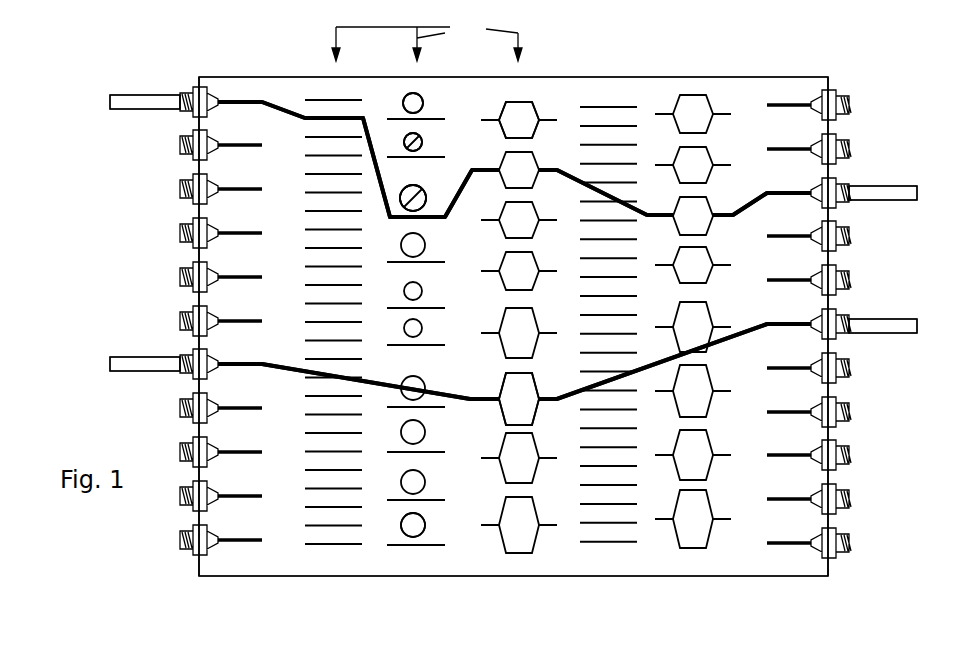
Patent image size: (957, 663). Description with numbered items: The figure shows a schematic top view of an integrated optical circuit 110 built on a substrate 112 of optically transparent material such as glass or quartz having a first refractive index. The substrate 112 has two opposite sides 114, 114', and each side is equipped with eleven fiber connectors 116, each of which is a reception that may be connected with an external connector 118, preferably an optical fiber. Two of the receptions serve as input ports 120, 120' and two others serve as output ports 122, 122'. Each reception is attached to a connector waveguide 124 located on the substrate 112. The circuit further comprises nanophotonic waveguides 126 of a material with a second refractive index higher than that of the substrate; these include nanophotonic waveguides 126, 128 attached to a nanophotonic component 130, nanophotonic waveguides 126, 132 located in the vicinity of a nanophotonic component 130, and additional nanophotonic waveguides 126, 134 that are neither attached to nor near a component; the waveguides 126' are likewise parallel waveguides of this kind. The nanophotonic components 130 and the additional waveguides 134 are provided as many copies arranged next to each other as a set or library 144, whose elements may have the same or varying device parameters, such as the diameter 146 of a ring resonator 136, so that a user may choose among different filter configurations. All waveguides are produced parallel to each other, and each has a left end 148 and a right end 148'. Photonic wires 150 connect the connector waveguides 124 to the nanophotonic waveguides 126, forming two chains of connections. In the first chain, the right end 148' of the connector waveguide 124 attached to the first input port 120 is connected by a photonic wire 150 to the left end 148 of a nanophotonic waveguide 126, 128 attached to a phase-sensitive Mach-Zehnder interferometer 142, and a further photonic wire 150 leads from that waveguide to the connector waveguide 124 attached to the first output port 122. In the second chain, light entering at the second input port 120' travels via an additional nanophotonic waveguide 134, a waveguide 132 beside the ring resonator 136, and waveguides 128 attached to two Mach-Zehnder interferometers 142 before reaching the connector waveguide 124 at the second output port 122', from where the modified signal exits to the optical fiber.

The integrated optical circuit 110 is at (852, 76).
The substrate 112 is at (745, 565).
The side 114 is at (164, 330).
The side 114' is at (861, 326).
The fiber connector 116 is at (183, 190).
The external connector 118 is at (877, 327).
The input port 120 is at (138, 344).
The input port 120' is at (132, 119).
The output port 122 is at (883, 326).
The output port 122' is at (897, 172).
The connector waveguide 124 is at (784, 191).
The nanophotonic waveguide 126 is at (260, 321).
The conductive traces 126' is at (490, 197).
The nanophotonic waveguide attached to nanophotonic component 128 is at (528, 435).
The nanophotonic component 130 is at (411, 185).
The nanophotonic waveguide in vicinity of component 132 is at (423, 220).
The additional nanophotonic waveguide 134 is at (320, 98).
The ring resonator 136 is at (468, 167).
The Mach-Zehnder interferometer 142 is at (526, 101).
The set or library 144 is at (427, 41).
The diameter 146 is at (422, 190).
The first end 148 is at (497, 280).
The second end 148' is at (511, 262).
The photonic wire 150 is at (362, 382).